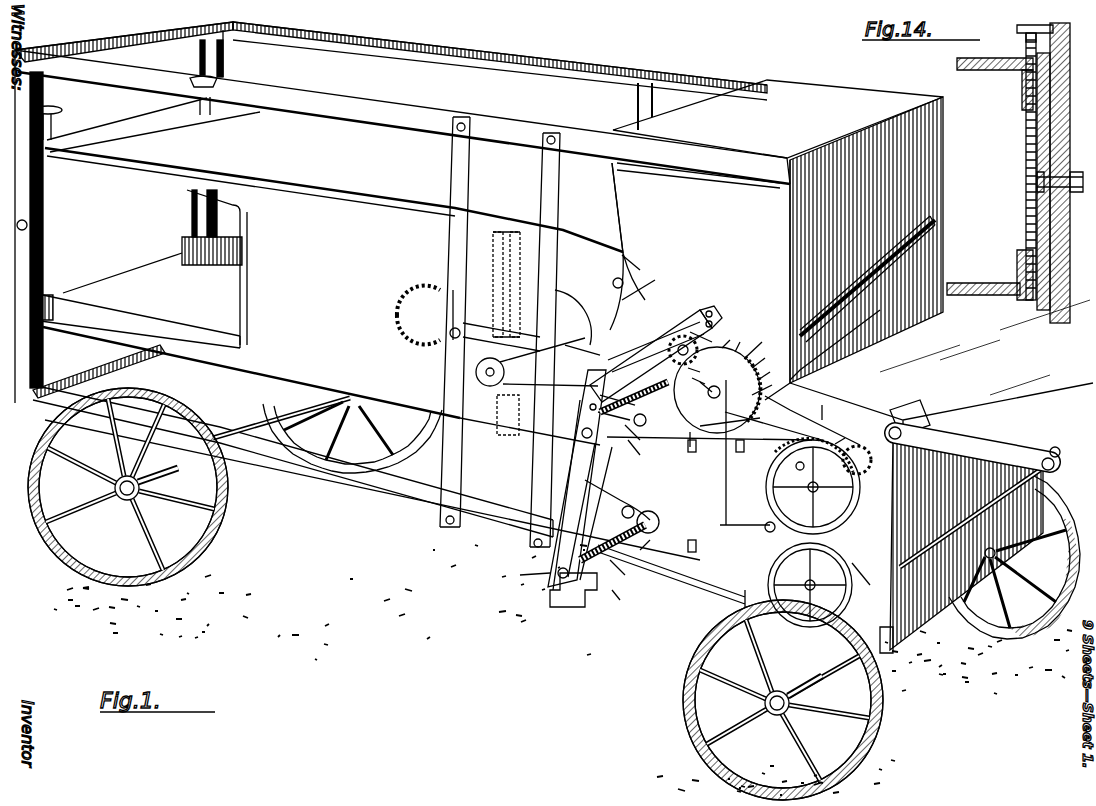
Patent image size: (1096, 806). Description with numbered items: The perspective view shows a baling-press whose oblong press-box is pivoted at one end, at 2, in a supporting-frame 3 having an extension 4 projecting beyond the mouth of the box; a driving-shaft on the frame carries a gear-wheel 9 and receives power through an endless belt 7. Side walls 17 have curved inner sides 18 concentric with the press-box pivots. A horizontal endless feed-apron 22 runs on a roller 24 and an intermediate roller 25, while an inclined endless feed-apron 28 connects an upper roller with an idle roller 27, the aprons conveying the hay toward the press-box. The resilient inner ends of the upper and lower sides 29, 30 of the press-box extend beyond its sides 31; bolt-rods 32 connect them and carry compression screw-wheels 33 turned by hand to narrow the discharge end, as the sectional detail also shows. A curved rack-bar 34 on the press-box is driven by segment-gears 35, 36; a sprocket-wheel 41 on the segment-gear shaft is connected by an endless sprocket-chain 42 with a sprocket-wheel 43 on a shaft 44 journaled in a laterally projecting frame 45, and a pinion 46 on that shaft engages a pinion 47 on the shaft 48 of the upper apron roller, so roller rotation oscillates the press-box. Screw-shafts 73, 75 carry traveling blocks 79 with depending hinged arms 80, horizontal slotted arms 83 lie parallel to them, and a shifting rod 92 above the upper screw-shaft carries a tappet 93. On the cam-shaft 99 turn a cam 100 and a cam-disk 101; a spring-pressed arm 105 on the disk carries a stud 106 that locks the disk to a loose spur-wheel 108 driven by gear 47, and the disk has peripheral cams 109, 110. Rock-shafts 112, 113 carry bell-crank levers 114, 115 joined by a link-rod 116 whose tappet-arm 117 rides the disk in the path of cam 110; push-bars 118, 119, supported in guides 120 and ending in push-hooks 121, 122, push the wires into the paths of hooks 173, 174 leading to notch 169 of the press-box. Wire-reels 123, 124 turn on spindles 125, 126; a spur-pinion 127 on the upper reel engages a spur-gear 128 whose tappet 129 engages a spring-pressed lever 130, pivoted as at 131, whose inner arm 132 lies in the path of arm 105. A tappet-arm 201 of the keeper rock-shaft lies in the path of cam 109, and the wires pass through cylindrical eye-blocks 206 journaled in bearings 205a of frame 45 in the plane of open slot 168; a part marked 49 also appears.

In FIG. 1, the pivot 2 is at (204, 74).
In FIG. 14, the pivot 2 is at (1078, 174).
In FIG. 14, the supporting-frame 3 is at (1070, 108).
In FIG. 1, the extension 4 is at (842, 84).
In FIG. 1, the endless belt 7 is at (321, 340).
In FIG. 1, the gear-wheel 9 is at (612, 80).
In FIG. 1, the side walls 17 is at (665, 208).
In FIG. 1, the curved inner sides 18 is at (628, 222).
In FIG. 1, the endless feed-apron 22 is at (929, 476).
In FIG. 1, the roller 24 is at (1048, 440).
In FIG. 1, the intermediate roller 25 is at (932, 416).
In FIG. 1, the idle roller 27 is at (932, 220).
In FIG. 1, the inclined endless feed-apron 28 is at (800, 310).
In FIG. 1, the upper side of press-box 29 is at (125, 122).
In FIG. 14, the upper side of press-box 29 is at (982, 68).
In FIG. 1, the lower side of press-box 30 is at (108, 283).
In FIG. 14, the lower side of press-box 30 is at (987, 283).
In FIG. 1, the sides of press-box 31 is at (245, 298).
In FIG. 1, the bolt-rods 32 is at (58, 132).
In FIG. 14, the bolt-rods 32 is at (1025, 148).
In FIG. 1, the compression screw-wheels 33 is at (52, 108).
In FIG. 14, the compression screw-wheels 33 is at (1018, 30).
In FIG. 1, the curved rack-bar 34 is at (498, 265).
In FIG. 1, the segment-gear 35 is at (575, 318).
In FIG. 1, the segment-gear 36 is at (428, 318).
In FIG. 1, the sprocket-wheel 41 is at (486, 386).
In FIG. 1, the endless sprocket-chain 42 is at (512, 333).
In FIG. 1, the sprocket-wheel 43 is at (612, 350).
In FIG. 1, the shaft 44 is at (648, 335).
In FIG. 1, the frame 45 is at (548, 572).
In FIG. 1, the pinion 46 is at (706, 314).
In FIG. 1, the pinion 47 is at (701, 330).
In FIG. 1, the shaft 48 is at (693, 346).
In FIG. 1, the plate 49 is at (846, 337).
In FIG. 1, the screw-shaft 73 is at (571, 495).
In FIG. 1, the screw-shaft 75 is at (622, 531).
In FIG. 1, the traveling block 79 is at (634, 451).
In FIG. 1, the hinged arm 80 is at (640, 438).
In FIG. 1, the arms 83 is at (590, 540).
In FIG. 1, the shifting rod 92 is at (593, 418).
In FIG. 1, the tappet 93 is at (600, 400).
In FIG. 1, the cam-shaft 99 is at (698, 389).
In FIG. 1, the cam 100 is at (692, 377).
In FIG. 1, the cam-disk 101 is at (717, 390).
In FIG. 1, the spring-pressed arm 105 is at (716, 385).
In FIG. 1, the pin or stud 106 is at (766, 357).
In FIG. 1, the spur-wheel 108 is at (762, 344).
In FIG. 1, the peripheral cam 109 is at (728, 334).
In FIG. 1, the peripheral cam 110 is at (771, 371).
In FIG. 1, the rock-shaft 112 is at (812, 419).
In FIG. 1, the rock-shaft 113 is at (770, 525).
In FIG. 1, the bell-crank lever 114 is at (769, 386).
In FIG. 1, the bell-crank lever 115 is at (738, 530).
In FIG. 1, the link-rod 116 is at (724, 485).
In FIG. 1, the tappet-arm 117 is at (741, 339).
In FIG. 1, the push-bar 118 is at (692, 452).
In FIG. 1, the push-bar 119 is at (698, 578).
In FIG. 1, the guides 120 is at (690, 450).
In FIG. 1, the push-hook 121 is at (688, 431).
In FIG. 1, the push-hook 122 is at (655, 550).
In FIG. 1, the wire-reel 123 is at (845, 513).
In FIG. 1, the wire-reel 124 is at (860, 580).
In FIG. 1, the spindle 125 is at (856, 490).
In FIG. 1, the spindle 126 is at (835, 565).
In FIG. 1, the spur-pinion 127 is at (864, 451).
In FIG. 1, the spur-gear 128 is at (845, 438).
In FIG. 1, the tappet 129 is at (800, 470).
In FIG. 1, the spring-pressed lever 130 is at (785, 425).
In FIG. 1, the pin 131 is at (830, 407).
In FIG. 1, the inner arm 132 is at (730, 425).
In FIG. 1, the open slot 168 is at (610, 520).
In FIG. 1, the notch 169 is at (616, 280).
In FIG. 1, the hook 173 is at (642, 278).
In FIG. 1, the hook 174 is at (645, 298).
In FIG. 1, the tappet-arm 201 is at (700, 369).
In FIG. 1, the bearings 205a is at (578, 606).
In FIG. 1, the cylindrical eye-blocks 206 is at (628, 455).